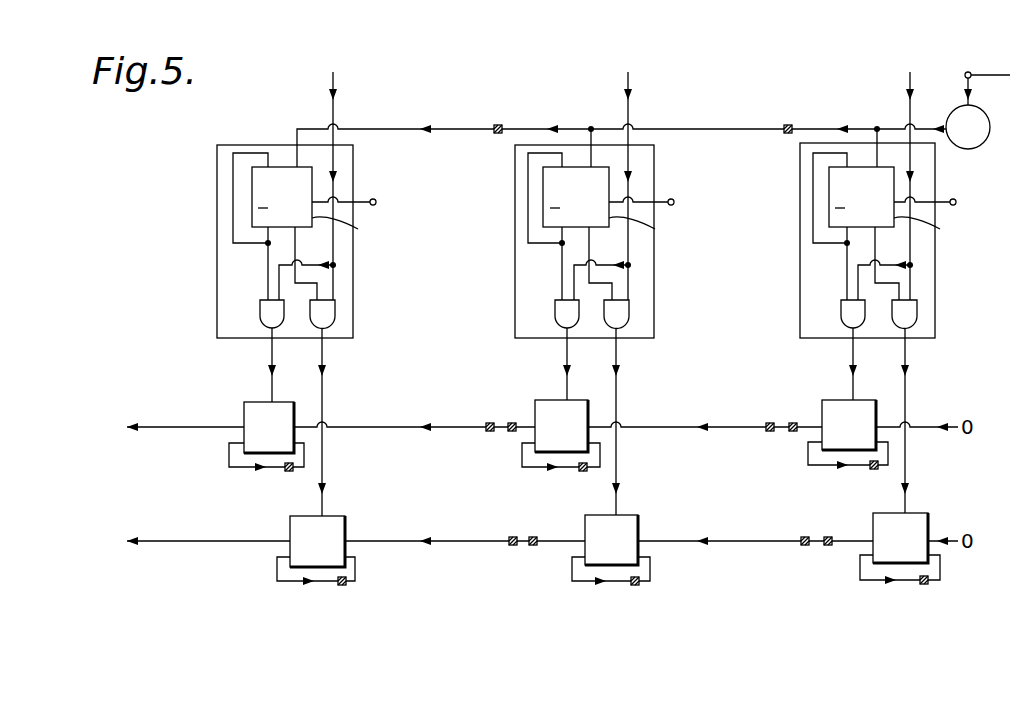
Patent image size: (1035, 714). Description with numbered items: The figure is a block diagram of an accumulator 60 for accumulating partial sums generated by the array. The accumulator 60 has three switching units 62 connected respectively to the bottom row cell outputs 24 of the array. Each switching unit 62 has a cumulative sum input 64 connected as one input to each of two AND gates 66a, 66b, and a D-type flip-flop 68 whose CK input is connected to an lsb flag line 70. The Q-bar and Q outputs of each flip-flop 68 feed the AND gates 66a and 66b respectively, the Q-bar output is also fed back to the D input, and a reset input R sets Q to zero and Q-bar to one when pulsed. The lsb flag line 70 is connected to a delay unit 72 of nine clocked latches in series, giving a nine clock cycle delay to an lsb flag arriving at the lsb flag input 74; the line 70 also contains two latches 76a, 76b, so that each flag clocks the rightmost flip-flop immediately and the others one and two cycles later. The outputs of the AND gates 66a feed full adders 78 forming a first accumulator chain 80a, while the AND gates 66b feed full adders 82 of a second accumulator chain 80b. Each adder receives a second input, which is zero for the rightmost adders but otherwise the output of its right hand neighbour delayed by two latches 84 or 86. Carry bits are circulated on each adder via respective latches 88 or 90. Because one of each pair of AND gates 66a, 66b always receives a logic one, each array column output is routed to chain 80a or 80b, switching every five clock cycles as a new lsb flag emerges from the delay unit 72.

The bottom row cell outputs 24 is at (331, 82).
The lsb flag line 70 is at (393, 127).
The latch 76a is at (498, 123).
The latch 76b is at (786, 124).
The lsb flag input 74 is at (992, 64).
The delay unit 72 is at (983, 143).
The switching unit 62 is at (217, 258).
The cumulative sum input 64 is at (340, 148).
The D-type flip-flop 68 is at (252, 190).
The AND gate 66a is at (260, 312).
The AND gate 66b is at (337, 318).
The full adder 78 is at (244, 405).
The latch 88 is at (285, 471).
The full adder 82 is at (345, 517).
The first accumulator chain 80a is at (208, 446).
The second accumulator chain 80b is at (240, 570).
The latches 84 is at (512, 435).
The latches 86 is at (533, 549).
The latch 90 is at (637, 590).
The accumulator 60 is at (340, 590).